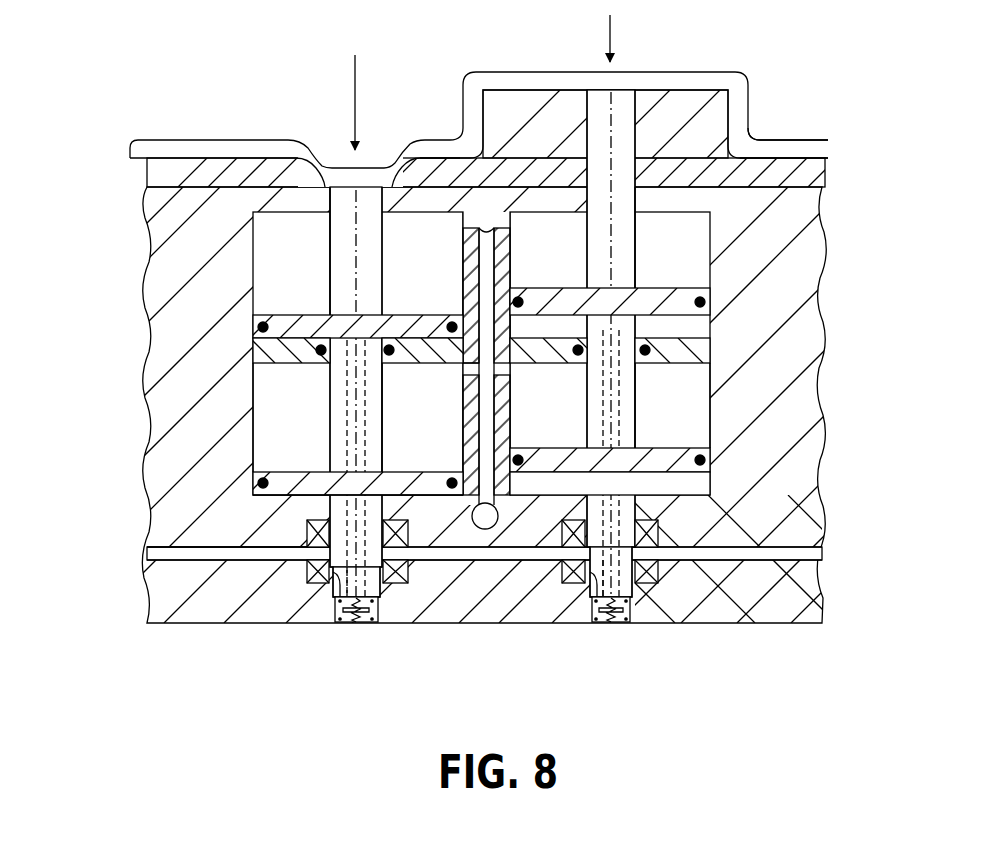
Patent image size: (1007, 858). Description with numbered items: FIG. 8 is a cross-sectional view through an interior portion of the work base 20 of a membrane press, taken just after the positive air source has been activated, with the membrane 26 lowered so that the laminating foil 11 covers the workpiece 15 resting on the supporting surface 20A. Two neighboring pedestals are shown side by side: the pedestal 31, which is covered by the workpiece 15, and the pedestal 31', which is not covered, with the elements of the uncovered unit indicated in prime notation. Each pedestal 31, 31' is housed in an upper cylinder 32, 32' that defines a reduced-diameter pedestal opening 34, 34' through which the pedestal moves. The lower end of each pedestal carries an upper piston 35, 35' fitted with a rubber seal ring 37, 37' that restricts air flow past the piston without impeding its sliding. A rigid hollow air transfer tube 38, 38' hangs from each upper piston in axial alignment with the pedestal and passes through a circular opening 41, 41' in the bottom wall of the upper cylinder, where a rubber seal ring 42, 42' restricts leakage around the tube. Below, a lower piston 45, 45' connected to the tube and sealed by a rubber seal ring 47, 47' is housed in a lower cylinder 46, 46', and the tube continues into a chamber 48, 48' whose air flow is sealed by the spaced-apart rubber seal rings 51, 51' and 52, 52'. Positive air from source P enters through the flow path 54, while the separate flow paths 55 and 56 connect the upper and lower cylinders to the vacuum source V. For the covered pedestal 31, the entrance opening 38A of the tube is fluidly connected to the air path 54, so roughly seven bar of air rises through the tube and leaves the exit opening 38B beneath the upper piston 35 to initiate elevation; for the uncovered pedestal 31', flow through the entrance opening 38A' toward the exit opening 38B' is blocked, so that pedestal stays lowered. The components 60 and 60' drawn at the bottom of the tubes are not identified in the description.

The work base 20 is at (101, 114).
The supporting surface 20A is at (753, 173).
The laminating foil 11 is at (170, 165).
The membrane 26 is at (183, 140).
The workpiece 15 is at (565, 118).
The upper cylinder 32 is at (510, 155).
The upper cylinder 32' is at (422, 175).
The flow path 55 is at (461, 270).
The flow path 56 is at (452, 367).
The flow path 54 is at (467, 548).
The pedestal 31 is at (675, 157).
The pedestal 31' is at (301, 347).
The pedestal opening 34 is at (624, 304).
The pedestal opening 34' is at (310, 204).
The upper piston 35 is at (698, 255).
The upper piston 35' is at (273, 288).
The rubber seal ring 37 is at (694, 304).
The rubber seal ring 37' is at (269, 324).
The air transfer tube 38 is at (753, 406).
The air transfer tube 38' is at (211, 421).
The entrance opening 38A is at (633, 618).
The entrance opening 38A' is at (396, 620).
The exit opening 38B is at (748, 443).
The exit opening 38B' is at (220, 468).
The circular opening 41 is at (760, 405).
The circular opening 41' is at (212, 417).
The rubber seal ring 42 is at (698, 332).
The rubber seal ring 42' is at (261, 340).
The lower piston 45 is at (510, 534).
The lower piston 45' is at (238, 576).
The lower cylinder 46 is at (692, 462).
The lower cylinder 46' is at (276, 486).
The rubber seal ring 47 is at (691, 502).
The rubber seal ring 47' is at (276, 519).
The chamber 48 is at (576, 624).
The chamber 48' is at (319, 629).
The rubber seal ring 51 is at (655, 591).
The rubber seal ring 51' is at (305, 599).
The rubber seal ring 52 is at (634, 634).
The rubber seal ring 52' is at (331, 615).
The spring return unit 60 is at (606, 652).
The spring return unit (second valve) 60' is at (360, 646).